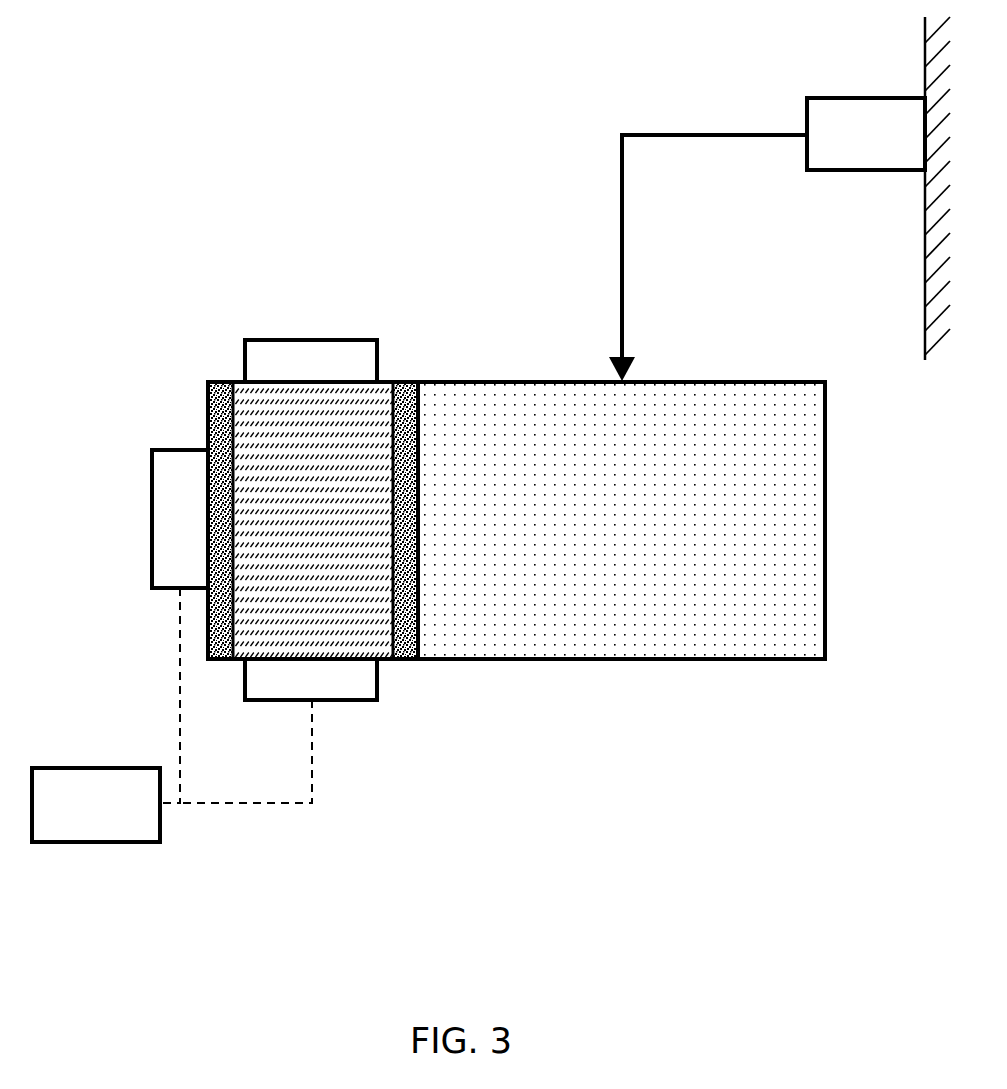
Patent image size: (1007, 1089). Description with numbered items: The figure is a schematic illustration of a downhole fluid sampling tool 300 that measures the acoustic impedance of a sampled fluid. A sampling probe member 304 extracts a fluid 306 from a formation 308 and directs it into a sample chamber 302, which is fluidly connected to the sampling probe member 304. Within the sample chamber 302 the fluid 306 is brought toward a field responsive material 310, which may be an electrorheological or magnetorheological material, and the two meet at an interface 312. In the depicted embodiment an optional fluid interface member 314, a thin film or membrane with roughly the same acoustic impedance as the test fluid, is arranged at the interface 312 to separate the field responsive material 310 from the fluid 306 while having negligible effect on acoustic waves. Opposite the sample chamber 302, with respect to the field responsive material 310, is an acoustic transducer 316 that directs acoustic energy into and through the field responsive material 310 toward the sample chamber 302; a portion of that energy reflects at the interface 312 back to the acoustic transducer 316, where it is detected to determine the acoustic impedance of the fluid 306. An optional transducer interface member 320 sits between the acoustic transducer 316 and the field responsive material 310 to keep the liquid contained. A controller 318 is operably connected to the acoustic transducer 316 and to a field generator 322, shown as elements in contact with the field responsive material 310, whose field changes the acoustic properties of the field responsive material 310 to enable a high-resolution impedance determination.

The downhole fluid sampling tool 300 is at (215, 268).
The sample chamber 302 is at (660, 563).
The sampling probe member 304 is at (857, 98).
The fluid 306 is at (690, 600).
The formation 308 is at (937, 290).
The field responsive material 310 is at (353, 612).
The interface 312 is at (409, 680).
The fluid interface member 314 is at (398, 380).
The acoustic transducer 316 is at (173, 503).
The controller 318 is at (96, 842).
The transducer interface member 320 is at (220, 380).
The field generator 322 is at (345, 340).